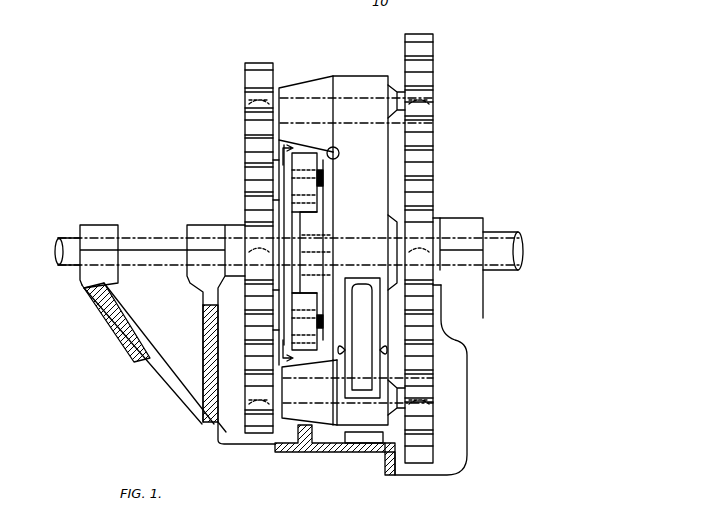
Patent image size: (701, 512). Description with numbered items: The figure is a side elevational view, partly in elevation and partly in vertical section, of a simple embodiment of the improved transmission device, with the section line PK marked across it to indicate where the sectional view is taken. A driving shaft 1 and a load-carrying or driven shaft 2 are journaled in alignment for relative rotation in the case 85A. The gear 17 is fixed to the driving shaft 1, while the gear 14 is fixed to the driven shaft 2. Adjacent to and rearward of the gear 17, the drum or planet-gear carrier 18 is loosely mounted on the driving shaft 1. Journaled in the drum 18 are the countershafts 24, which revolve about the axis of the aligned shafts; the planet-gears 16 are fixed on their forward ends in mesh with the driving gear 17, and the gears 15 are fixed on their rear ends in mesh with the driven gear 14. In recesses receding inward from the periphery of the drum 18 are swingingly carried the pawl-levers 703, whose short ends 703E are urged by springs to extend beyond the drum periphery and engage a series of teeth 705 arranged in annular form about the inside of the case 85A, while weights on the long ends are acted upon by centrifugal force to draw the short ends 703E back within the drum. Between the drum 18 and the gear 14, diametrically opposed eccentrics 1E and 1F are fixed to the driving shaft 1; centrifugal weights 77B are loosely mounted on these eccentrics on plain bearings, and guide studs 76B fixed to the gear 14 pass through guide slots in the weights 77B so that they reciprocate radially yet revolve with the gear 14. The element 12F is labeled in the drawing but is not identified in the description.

The driving shaft 1 is at (504, 232).
The driven shaft 2 is at (136, 234).
The driven gear 14 is at (246, 182).
The gears on rear ends of countershafts 15 is at (246, 77).
The planet-gears 16 is at (434, 62).
The driving gear 17 is at (434, 192).
The drum or planet-gear carrier 18 is at (335, 78).
The countershafts 24 is at (322, 100).
The eccentric 1E is at (245, 204).
The eccentric 1F is at (245, 287).
The shift sleeve 12F is at (325, 218).
The guide studs 76B is at (323, 176).
The centrifugal weights 77B is at (334, 150).
The pawl-levers 703 is at (366, 274).
The short ends of pawl-levers 703E is at (358, 382).
The teeth 705 is at (366, 442).
The case 85A is at (286, 450).
The section line PK— PK is at (298, 256).